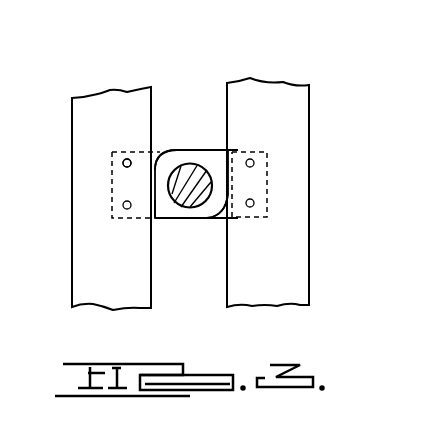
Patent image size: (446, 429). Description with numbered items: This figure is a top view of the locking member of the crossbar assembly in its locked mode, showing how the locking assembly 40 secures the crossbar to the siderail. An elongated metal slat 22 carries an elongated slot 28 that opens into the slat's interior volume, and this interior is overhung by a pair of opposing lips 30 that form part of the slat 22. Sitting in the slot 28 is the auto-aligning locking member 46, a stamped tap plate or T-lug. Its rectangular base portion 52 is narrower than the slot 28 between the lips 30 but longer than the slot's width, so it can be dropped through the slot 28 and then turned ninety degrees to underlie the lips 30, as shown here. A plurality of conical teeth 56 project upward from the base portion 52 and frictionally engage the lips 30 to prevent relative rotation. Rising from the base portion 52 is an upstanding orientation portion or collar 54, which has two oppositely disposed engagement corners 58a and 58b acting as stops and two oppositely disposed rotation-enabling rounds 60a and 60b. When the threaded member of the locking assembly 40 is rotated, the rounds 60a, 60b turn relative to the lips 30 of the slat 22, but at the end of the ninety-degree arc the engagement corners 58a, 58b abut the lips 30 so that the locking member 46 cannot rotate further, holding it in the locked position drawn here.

The slat 22 is at (100, 290).
The lips 30 is at (287, 290).
The slot 28 is at (208, 103).
The locking assembly 40 is at (288, 160).
The locking member 46 is at (267, 195).
The base portion 52 is at (110, 183).
The orientation portion 54 is at (188, 220).
The teeth 56 is at (121, 160).
The engagement corner 58a is at (220, 153).
The engagement corner 58b is at (160, 220).
The rotation-enabling round 60a is at (212, 205).
The rotation-enabling round 60b is at (170, 165).